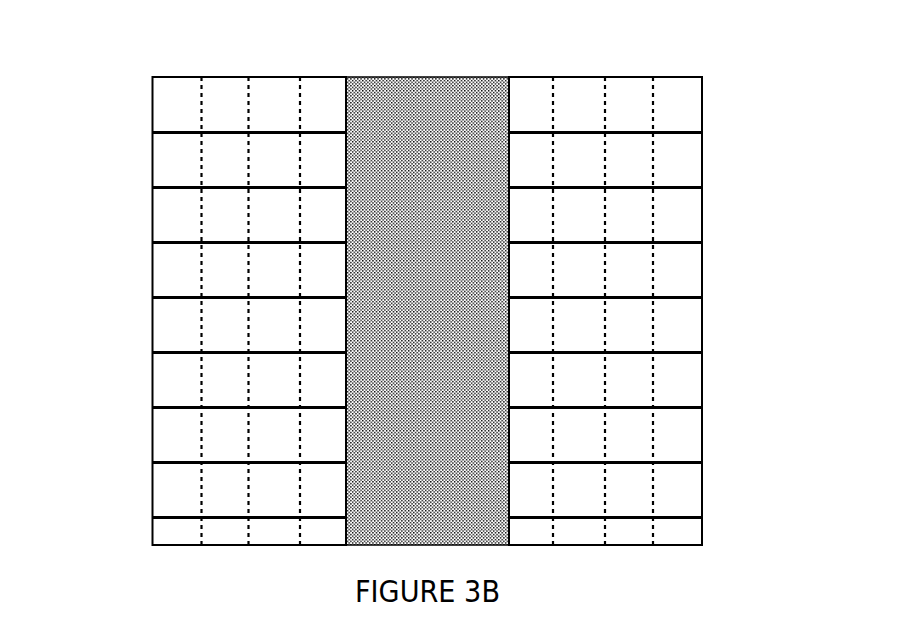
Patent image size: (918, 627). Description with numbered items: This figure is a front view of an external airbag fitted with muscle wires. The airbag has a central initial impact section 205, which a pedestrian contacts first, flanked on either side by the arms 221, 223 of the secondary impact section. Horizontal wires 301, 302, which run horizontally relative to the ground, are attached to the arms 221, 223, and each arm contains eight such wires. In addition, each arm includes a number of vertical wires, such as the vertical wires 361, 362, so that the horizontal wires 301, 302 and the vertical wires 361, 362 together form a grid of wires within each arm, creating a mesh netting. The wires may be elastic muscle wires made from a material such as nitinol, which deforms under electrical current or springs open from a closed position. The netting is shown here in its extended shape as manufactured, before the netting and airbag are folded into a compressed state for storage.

The arm 221 is at (182, 97).
The arm 223 is at (685, 106).
The wire 301 is at (183, 187).
The wire 302 is at (675, 187).
The vertical wire 361 is at (200, 225).
The vertical wire 362 is at (653, 277).
The initial impact section 205 is at (430, 435).